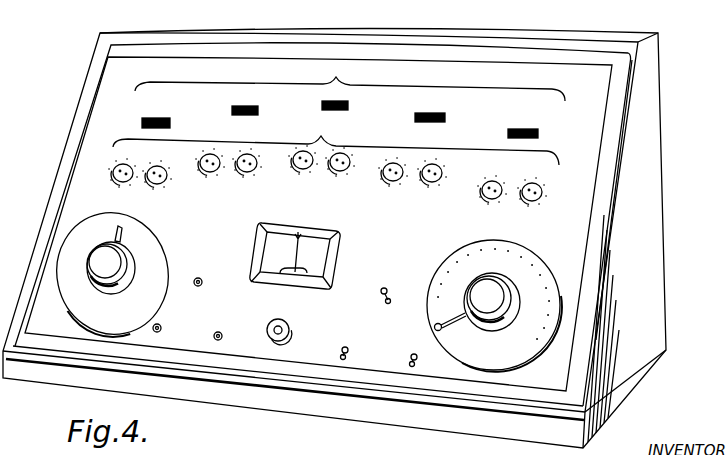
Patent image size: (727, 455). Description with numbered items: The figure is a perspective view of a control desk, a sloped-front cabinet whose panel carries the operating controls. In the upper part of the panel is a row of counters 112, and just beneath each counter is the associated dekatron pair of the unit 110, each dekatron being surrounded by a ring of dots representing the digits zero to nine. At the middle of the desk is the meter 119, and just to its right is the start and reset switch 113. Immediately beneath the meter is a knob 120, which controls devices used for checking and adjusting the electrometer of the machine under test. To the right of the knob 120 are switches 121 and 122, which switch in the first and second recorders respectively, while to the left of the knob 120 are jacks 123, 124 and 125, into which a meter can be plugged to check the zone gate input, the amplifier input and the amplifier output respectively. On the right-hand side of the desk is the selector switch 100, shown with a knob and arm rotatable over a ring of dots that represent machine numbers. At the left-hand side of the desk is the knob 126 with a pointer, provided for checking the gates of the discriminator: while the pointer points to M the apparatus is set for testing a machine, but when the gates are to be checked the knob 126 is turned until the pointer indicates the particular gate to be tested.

The selector switch 100 is at (530, 263).
The unit 110 is at (334, 159).
The counters 112 is at (350, 102).
The start and reset switch 113 is at (385, 287).
The meter 119 is at (318, 248).
The knob 120 is at (290, 326).
The switch 121 is at (348, 347).
The switch 122 is at (413, 354).
The jack 123 is at (199, 278).
The jack 124 is at (162, 326).
The jack 125 is at (219, 332).
The knob 126 is at (160, 236).